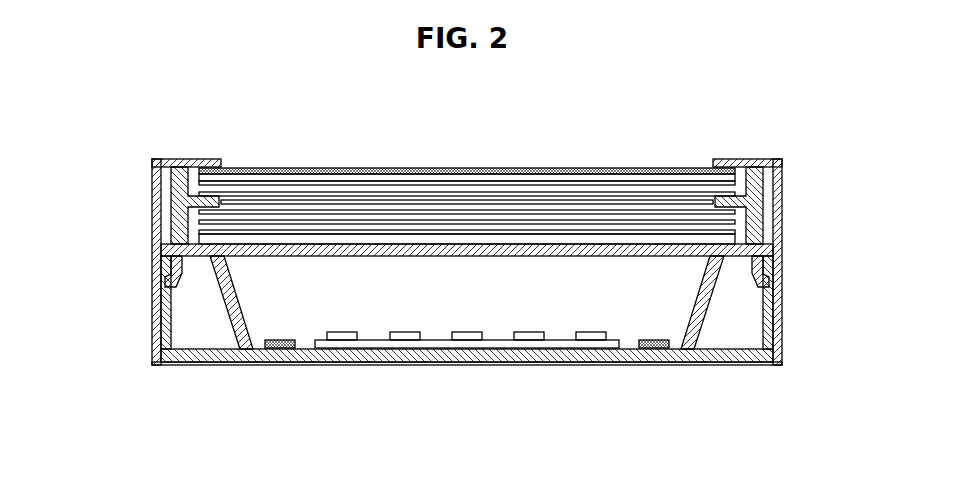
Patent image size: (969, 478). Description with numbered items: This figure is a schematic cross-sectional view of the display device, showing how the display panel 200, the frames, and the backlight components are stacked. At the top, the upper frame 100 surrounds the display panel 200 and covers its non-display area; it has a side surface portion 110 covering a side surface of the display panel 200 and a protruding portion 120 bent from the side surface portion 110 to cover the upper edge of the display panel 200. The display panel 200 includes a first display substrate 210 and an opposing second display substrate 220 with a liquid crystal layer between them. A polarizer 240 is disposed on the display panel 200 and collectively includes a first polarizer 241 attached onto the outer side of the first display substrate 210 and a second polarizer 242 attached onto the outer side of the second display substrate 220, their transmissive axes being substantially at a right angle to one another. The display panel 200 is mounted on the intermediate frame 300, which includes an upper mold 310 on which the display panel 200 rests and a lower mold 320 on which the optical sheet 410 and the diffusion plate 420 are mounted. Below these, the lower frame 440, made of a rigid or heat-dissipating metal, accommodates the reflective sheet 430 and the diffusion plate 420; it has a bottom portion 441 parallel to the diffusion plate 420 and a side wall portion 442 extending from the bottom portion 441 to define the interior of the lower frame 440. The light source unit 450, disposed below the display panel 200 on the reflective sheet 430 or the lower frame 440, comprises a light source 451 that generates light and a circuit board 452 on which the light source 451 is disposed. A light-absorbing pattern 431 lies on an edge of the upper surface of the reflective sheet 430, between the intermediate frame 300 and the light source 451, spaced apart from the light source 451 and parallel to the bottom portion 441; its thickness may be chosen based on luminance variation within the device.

The upper frame 100 is at (412, 192).
The side surface portion 110 is at (93, 148).
The protruding portion 120 is at (170, 162).
The display panel 200 is at (467, 137).
The first display substrate 210 is at (338, 120).
The second display substrate 220 is at (336, 174).
The polarizer 240 is at (467, 152).
The first polarizer 241 is at (500, 203).
The second polarizer 242 is at (450, 196).
The intermediate frame 300 is at (519, 277).
The upper mold 310 is at (758, 218).
The lower mold 320 is at (712, 302).
The optical sheet 410 is at (645, 232).
The diffusion plate 420 is at (551, 240).
The reflective sheet 430 is at (712, 356).
The light-absorbing pattern 431 is at (655, 348).
The lower frame 440 is at (412, 270).
The bottom portion 441 is at (205, 367).
The side wall portion 442 is at (158, 321).
The light source unit 450 is at (467, 388).
The light source 451 is at (471, 341).
The circuit board 452 is at (526, 348).